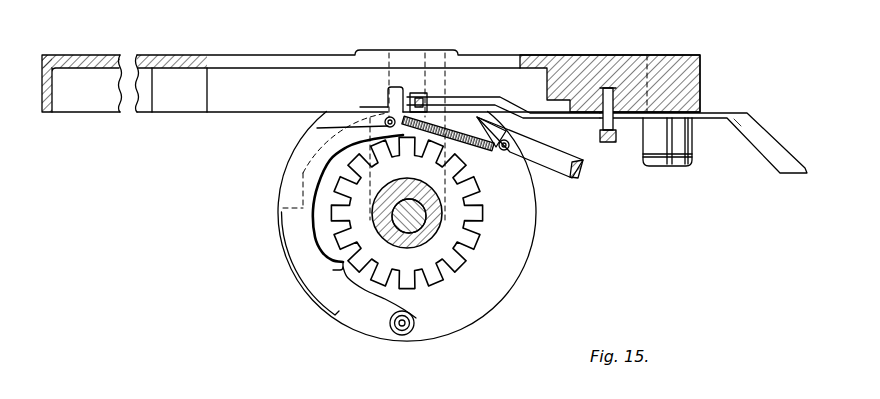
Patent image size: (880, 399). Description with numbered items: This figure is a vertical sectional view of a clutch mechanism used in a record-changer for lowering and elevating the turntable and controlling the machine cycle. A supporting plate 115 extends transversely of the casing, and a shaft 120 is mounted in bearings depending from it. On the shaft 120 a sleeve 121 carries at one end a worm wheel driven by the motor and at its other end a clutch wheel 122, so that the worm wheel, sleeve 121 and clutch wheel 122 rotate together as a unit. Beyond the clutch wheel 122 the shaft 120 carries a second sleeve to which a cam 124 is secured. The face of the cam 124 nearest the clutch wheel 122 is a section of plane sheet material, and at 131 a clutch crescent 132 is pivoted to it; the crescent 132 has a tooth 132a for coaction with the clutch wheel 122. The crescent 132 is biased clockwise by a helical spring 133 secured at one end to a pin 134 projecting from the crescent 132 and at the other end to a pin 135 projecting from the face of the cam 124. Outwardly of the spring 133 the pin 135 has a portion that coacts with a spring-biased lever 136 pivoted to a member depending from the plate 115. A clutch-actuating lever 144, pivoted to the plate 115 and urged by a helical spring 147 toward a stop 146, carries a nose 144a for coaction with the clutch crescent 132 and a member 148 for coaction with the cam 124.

The supporting plate 115 is at (385, 116).
The nose 144a is at (415, 61).
The member 148 is at (503, 69).
The helical spring 133 is at (513, 89).
The clutch-actuating lever 144 is at (703, 119).
The helical spring 147 is at (599, 147).
The stop 146 is at (653, 162).
The pin 134 is at (376, 174).
The lever 136 is at (530, 183).
The pin 135 is at (508, 171).
The shaft 120 is at (407, 227).
The clutch wheel 122 is at (449, 214).
The sleeve 121 is at (343, 206).
The clutch crescent 132 is at (310, 288).
The tooth 132a is at (291, 286).
The cam 124 is at (407, 320).
The pivot 131 is at (388, 342).